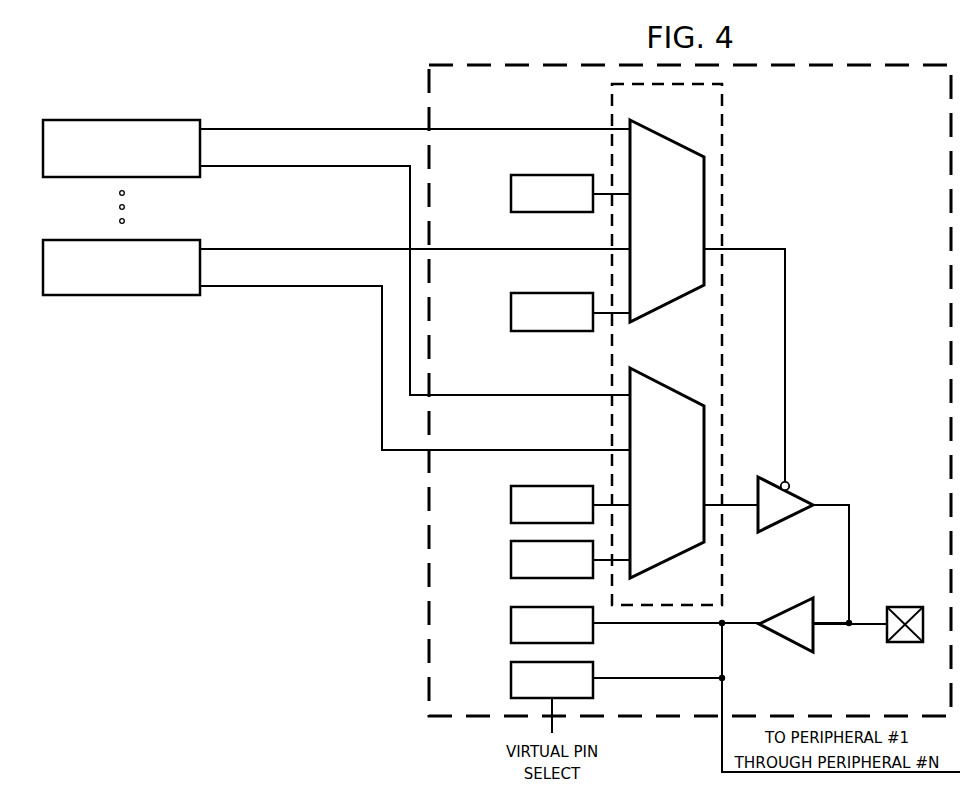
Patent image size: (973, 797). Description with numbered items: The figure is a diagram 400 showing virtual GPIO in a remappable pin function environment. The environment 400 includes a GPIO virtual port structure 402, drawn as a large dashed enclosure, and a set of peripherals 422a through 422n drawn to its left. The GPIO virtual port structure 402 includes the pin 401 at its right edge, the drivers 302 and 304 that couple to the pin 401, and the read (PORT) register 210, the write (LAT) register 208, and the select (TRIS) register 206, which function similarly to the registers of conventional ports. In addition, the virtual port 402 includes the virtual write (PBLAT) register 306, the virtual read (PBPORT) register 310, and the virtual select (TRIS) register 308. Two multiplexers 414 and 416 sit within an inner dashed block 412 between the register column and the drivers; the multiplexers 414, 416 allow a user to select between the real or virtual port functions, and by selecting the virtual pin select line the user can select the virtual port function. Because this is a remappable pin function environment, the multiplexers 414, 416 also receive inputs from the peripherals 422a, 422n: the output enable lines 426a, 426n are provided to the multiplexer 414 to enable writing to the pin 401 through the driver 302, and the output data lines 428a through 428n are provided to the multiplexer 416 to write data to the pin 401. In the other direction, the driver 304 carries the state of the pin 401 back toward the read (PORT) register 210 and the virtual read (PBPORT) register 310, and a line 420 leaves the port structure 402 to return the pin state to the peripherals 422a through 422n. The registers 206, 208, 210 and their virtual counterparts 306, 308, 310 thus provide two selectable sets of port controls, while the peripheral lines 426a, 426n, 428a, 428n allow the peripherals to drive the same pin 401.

The diagram 400 is at (388, 61).
The GPIO virtual port structure 402 is at (848, 169).
The multiplexer block 412 is at (650, 358).
The multiplexer 414 is at (650, 233).
The multiplexer 416 is at (650, 483).
The peripheral 422a is at (93, 120).
The peripheral 422n is at (93, 240).
The output enable line 426a is at (475, 129).
The output enable line 426n is at (475, 249).
The output data line 428a is at (479, 396).
The output data line 428n is at (479, 451).
The select (TRIS) register 206 is at (511, 182).
The virtual write (PBLAT) register 306 is at (511, 300).
The write (LAT) register 208 is at (511, 516).
The virtual select (TRIS) register 308 is at (511, 571).
The read (PORT) register 210 is at (511, 635).
The virtual read (PBPORT) register 310 is at (511, 690).
The driver 302 is at (789, 521).
The driver 304 is at (783, 641).
The pin 401 is at (912, 643).
The input signal line to peripherals 420 is at (720, 652).